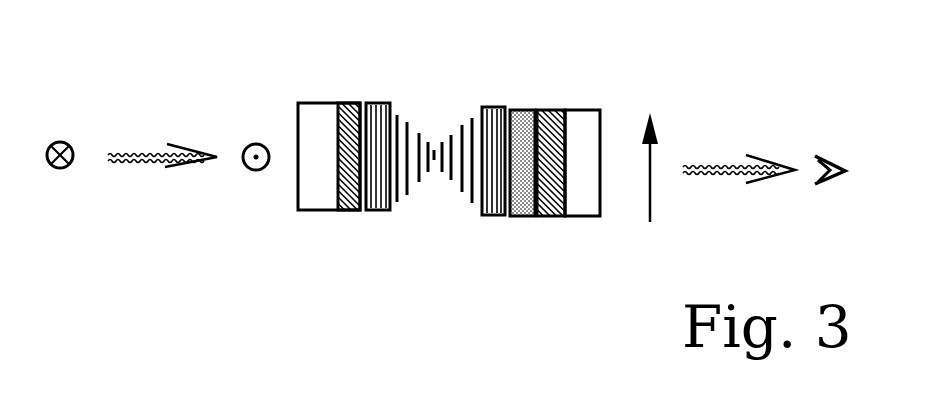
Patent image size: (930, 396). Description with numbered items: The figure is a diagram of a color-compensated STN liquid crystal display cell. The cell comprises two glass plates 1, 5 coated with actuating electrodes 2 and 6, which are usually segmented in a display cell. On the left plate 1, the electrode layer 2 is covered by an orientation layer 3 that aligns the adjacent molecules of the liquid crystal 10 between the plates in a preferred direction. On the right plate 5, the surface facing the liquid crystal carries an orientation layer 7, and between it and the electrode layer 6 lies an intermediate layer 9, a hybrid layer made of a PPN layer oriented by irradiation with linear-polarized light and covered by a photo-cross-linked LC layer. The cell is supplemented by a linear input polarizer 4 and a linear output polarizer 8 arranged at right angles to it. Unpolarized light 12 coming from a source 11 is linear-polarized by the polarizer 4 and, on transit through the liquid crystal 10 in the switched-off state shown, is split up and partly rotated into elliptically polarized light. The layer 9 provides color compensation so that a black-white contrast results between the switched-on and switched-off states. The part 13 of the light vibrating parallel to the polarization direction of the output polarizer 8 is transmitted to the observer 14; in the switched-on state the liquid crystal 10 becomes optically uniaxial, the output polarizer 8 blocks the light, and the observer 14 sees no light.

The glass plate 1 is at (298, 203).
The electrode layer 2 is at (343, 210).
The orientation layer 3 is at (373, 210).
The linear input polarizer 4 is at (249, 170).
The glass plate 5 is at (582, 110).
The electrode layer 6 is at (557, 110).
The orientation layer 7 is at (500, 108).
The linear output polarizer 8 is at (658, 127).
The intermediate layer 9 is at (522, 215).
The liquid crystal 10 is at (460, 135).
The source 11 is at (65, 140).
The unpolarized light 12 is at (155, 147).
The part of the light 13 is at (723, 162).
The observer 14 is at (822, 183).